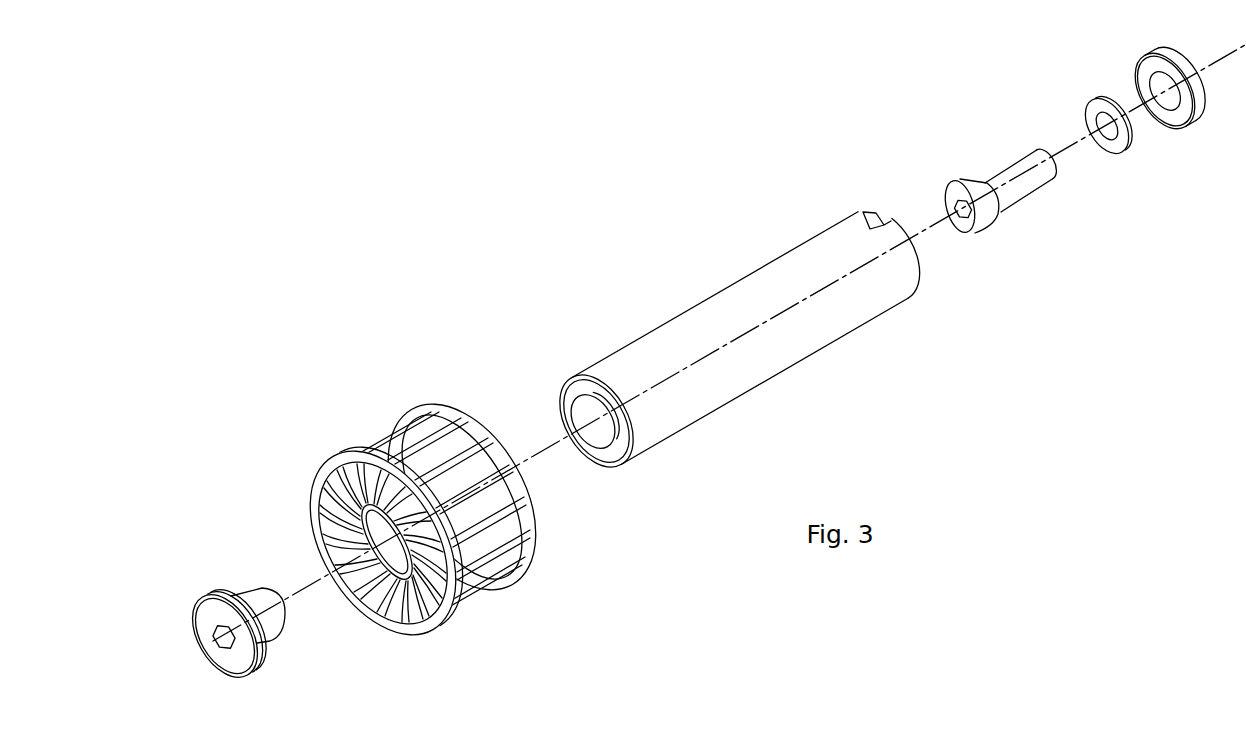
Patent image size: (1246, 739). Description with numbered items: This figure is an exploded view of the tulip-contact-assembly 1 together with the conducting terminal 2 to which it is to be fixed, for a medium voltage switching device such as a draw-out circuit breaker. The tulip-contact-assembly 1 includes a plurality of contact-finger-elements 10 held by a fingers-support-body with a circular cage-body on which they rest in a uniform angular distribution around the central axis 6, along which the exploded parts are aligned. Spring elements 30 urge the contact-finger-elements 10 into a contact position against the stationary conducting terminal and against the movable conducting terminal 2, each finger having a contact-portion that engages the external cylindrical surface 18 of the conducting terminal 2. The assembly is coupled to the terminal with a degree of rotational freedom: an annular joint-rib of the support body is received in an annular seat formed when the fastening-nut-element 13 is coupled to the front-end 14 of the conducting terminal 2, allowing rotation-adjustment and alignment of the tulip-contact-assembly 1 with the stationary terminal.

The tulip-contact-assembly 1 is at (396, 477).
The conducting terminal 2 is at (740, 327).
The central axis 6 is at (540, 453).
The contact-finger-elements 10 is at (320, 507).
The fastening-nut-element 13 is at (203, 618).
The front-end 14 is at (576, 391).
The external cylindrical surface 18 is at (720, 310).
The spring elements 30 is at (453, 608).